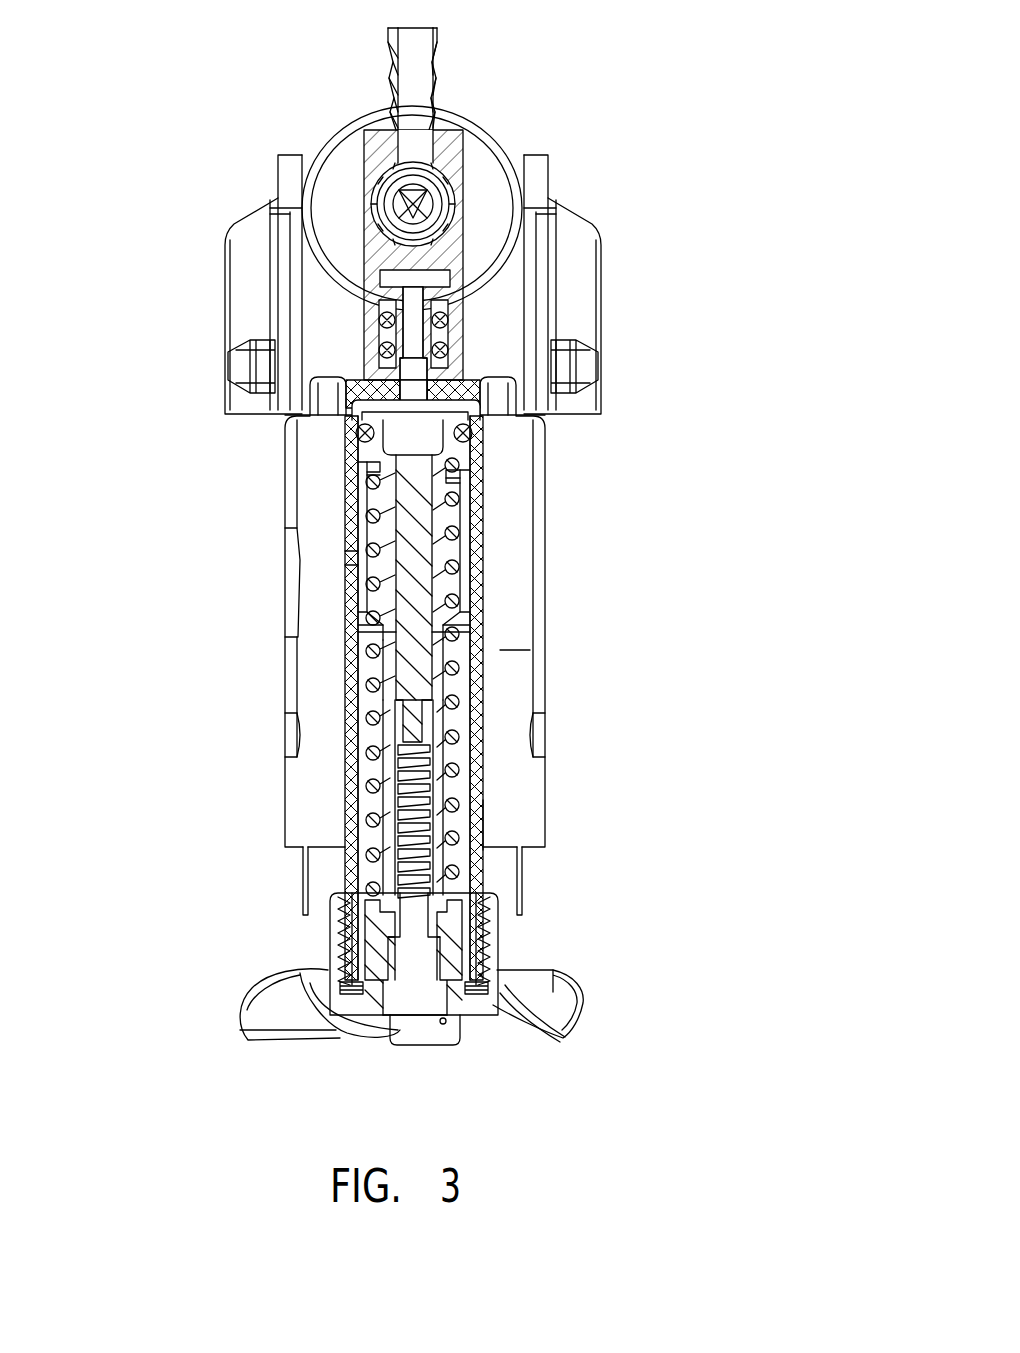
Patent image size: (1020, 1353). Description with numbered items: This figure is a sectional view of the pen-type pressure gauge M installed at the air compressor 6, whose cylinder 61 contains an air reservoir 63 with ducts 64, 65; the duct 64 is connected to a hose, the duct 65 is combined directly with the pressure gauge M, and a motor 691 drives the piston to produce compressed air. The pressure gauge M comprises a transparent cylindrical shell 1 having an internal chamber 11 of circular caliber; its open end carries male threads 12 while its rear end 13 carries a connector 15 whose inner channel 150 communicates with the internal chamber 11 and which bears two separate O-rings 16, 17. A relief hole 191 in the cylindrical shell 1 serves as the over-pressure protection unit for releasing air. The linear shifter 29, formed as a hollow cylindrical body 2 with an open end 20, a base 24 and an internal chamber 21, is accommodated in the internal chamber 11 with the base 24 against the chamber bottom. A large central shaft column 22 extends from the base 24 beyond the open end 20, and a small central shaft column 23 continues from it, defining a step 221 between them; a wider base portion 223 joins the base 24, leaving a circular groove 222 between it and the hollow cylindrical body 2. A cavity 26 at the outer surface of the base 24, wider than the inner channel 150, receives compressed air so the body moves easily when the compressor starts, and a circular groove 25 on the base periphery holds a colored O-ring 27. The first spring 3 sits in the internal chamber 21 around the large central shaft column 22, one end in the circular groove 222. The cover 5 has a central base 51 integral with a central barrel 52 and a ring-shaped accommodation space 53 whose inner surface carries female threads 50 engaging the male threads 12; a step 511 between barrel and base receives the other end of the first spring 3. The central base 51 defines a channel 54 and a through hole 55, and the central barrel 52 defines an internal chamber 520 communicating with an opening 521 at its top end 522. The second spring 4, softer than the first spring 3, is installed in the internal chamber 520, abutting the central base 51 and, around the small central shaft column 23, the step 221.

The cylindrical shell 1 is at (485, 583).
The hollow cylindrical body 2 is at (365, 530).
The first spring 3 is at (410, 680).
The second spring 4 is at (437, 778).
The cover 5 is at (497, 918).
The air compressor 6 is at (147, 168).
The internal chamber 11 is at (455, 725).
The male threads 12 is at (440, 1010).
The rear end 13 is at (338, 413).
The connector 15 is at (380, 300).
The O-ring 16 is at (452, 350).
The O-ring 17 is at (452, 325).
The open end 20 is at (482, 617).
The internal chamber 21 is at (450, 500).
The large central shaft column 22 is at (437, 586).
The small central shaft column 23 is at (367, 748).
The base 24 is at (480, 416).
The circular groove 25 is at (365, 450).
The cavity 26 is at (425, 438).
The colored O-ring 27 is at (372, 432).
The linear shifter 29 is at (347, 551).
The female threads 50 is at (490, 941).
The central base 51 is at (377, 953).
The central barrel 52 is at (443, 783).
The ring-shaped accommodation space 53 is at (362, 933).
The channel 54 is at (413, 970).
The through hole 55 is at (422, 1000).
The cylinder 61 is at (338, 128).
The air reservoir 63 is at (467, 200).
The duct 64 is at (437, 65).
The duct 65 is at (462, 296).
The inner channel 150 is at (452, 262).
The relief hole 191 is at (372, 565).
The step 221 is at (430, 717).
The circular groove 222 is at (368, 466).
The base portion 223 is at (480, 470).
The step 511 is at (380, 912).
The internal chamber 520 is at (440, 843).
The opening 521 is at (372, 627).
The top end 522 is at (368, 650).
The motor 691 is at (512, 685).
The pressure gauge M is at (487, 826).